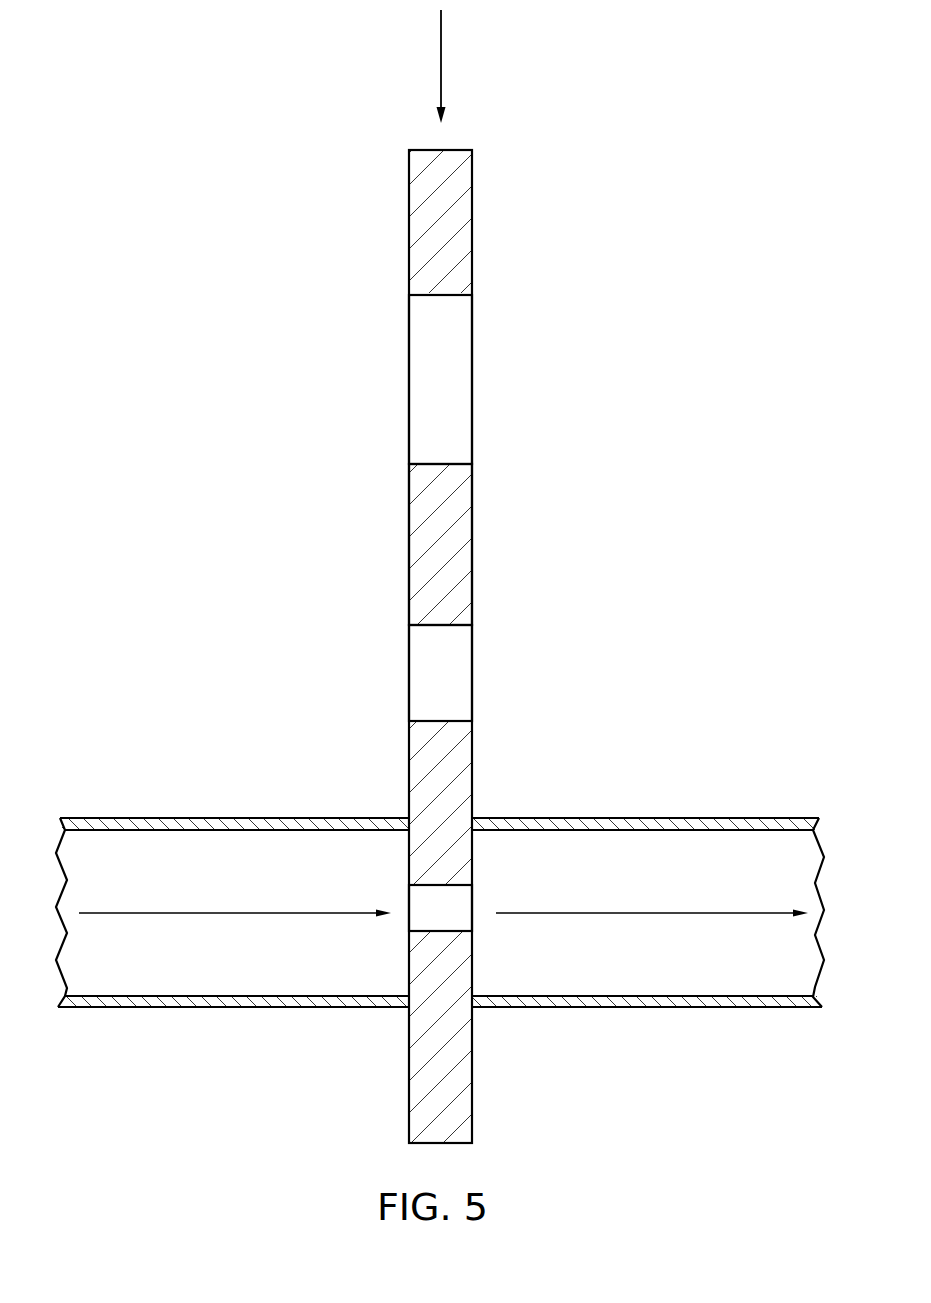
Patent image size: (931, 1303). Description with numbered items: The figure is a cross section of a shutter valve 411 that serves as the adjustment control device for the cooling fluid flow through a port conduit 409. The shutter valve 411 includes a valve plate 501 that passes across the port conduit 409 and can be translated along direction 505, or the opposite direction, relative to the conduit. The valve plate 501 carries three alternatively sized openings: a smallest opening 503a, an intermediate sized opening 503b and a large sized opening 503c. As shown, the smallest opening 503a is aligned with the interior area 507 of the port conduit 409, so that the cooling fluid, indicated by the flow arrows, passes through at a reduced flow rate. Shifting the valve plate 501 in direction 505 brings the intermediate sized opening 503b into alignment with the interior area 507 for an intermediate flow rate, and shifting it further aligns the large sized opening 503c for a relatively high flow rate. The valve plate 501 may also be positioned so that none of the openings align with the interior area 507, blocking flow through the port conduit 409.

The direction 505 is at (441, 56).
The valve plate 501 is at (472, 212).
The smallest opening 503a is at (462, 905).
The intermediate sized opening 503b is at (462, 672).
The large sized opening 503c is at (462, 372).
The shutter valve 411 is at (485, 477).
The port conduit 409 is at (138, 818).
The interior area 507 is at (685, 845).